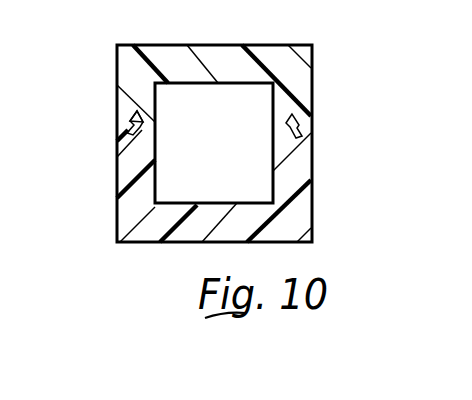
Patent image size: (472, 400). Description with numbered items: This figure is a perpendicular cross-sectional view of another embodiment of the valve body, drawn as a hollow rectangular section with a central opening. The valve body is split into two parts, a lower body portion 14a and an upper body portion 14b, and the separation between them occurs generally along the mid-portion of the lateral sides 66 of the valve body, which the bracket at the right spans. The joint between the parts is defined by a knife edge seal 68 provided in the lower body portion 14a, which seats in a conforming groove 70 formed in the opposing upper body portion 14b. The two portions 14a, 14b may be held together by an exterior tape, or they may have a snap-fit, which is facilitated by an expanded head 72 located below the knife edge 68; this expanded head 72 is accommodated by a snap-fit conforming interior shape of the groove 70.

The lower body portion 14a is at (132, 207).
The upper body portion 14b is at (127, 63).
The lateral sides 66 is at (333, 52).
The knife edge seal 68 is at (137, 113).
The conforming groove 70 is at (137, 113).
The expanded head 72 is at (288, 124).